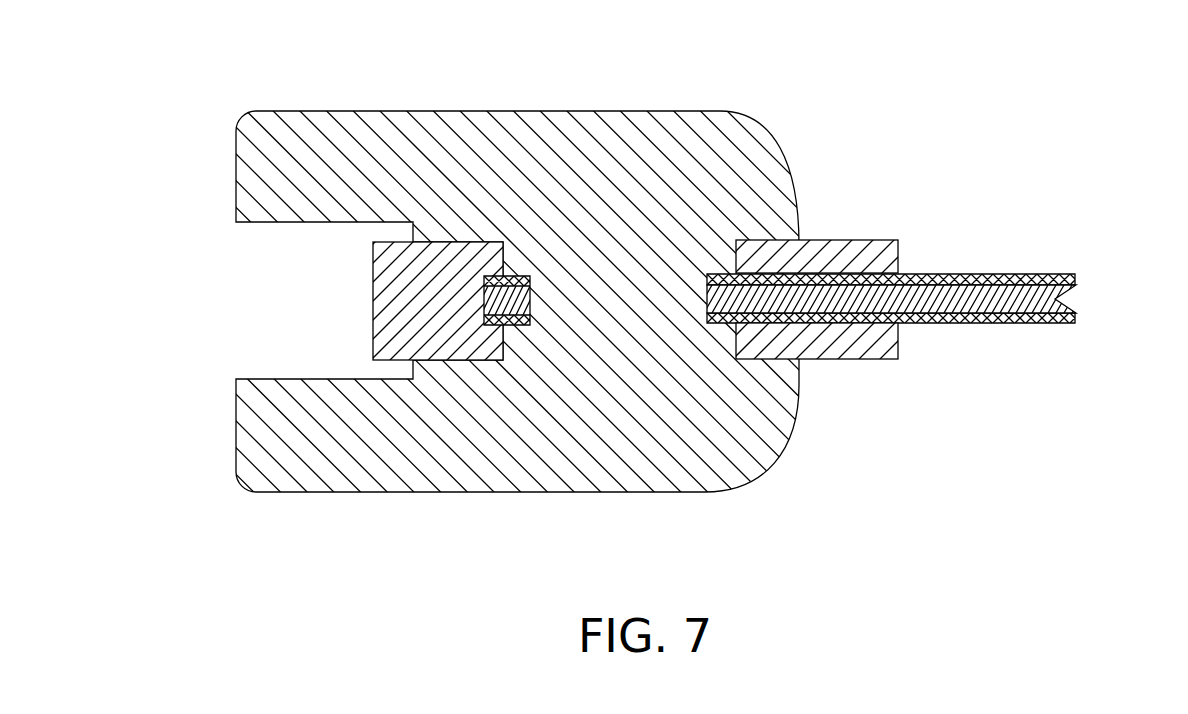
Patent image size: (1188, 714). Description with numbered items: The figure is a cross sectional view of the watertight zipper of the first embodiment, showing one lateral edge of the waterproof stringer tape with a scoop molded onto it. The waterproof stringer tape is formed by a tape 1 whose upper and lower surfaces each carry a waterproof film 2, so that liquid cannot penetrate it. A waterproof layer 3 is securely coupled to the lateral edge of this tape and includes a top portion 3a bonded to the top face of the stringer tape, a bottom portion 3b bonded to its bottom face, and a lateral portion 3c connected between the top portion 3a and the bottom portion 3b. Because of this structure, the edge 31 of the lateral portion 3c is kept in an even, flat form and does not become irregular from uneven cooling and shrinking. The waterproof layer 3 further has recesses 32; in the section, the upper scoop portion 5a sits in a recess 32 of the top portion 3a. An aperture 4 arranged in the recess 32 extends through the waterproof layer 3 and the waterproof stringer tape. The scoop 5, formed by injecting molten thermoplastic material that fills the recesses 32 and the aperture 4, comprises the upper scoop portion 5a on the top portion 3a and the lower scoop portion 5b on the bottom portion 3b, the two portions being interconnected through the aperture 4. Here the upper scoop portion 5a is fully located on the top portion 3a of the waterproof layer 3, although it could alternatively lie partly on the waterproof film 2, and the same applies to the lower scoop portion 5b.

The tape 1 is at (1053, 297).
The waterproof film 2 is at (1048, 272).
The waterproof layer 3 is at (693, 406).
The top portion 3a is at (847, 255).
The bottom portion 3b is at (810, 340).
The lateral portion 3c is at (513, 384).
The aperture 4 is at (532, 300).
The scoop 5 is at (594, 310).
The upper scoop portion 5a is at (247, 172).
The lower scoop portion 5b is at (240, 408).
The edge of the lateral portion 31 is at (373, 275).
The recess 32 is at (503, 243).